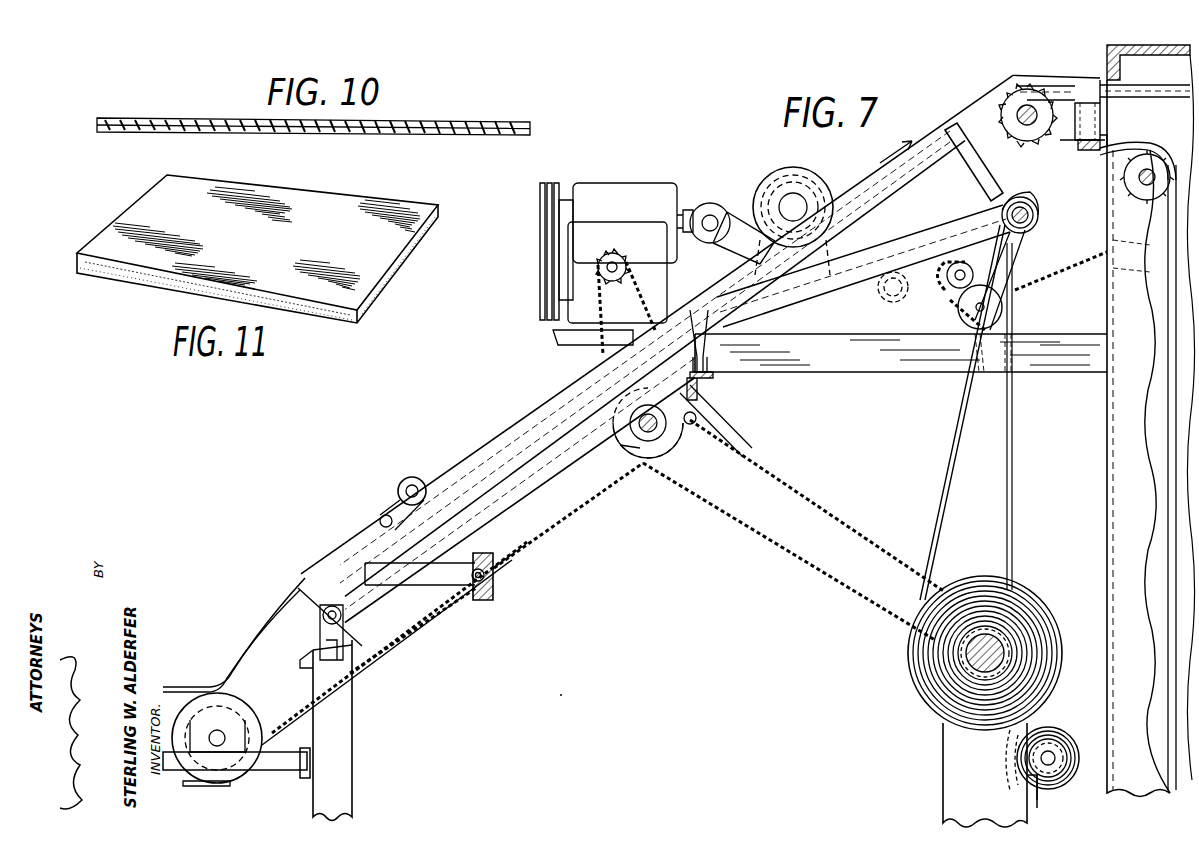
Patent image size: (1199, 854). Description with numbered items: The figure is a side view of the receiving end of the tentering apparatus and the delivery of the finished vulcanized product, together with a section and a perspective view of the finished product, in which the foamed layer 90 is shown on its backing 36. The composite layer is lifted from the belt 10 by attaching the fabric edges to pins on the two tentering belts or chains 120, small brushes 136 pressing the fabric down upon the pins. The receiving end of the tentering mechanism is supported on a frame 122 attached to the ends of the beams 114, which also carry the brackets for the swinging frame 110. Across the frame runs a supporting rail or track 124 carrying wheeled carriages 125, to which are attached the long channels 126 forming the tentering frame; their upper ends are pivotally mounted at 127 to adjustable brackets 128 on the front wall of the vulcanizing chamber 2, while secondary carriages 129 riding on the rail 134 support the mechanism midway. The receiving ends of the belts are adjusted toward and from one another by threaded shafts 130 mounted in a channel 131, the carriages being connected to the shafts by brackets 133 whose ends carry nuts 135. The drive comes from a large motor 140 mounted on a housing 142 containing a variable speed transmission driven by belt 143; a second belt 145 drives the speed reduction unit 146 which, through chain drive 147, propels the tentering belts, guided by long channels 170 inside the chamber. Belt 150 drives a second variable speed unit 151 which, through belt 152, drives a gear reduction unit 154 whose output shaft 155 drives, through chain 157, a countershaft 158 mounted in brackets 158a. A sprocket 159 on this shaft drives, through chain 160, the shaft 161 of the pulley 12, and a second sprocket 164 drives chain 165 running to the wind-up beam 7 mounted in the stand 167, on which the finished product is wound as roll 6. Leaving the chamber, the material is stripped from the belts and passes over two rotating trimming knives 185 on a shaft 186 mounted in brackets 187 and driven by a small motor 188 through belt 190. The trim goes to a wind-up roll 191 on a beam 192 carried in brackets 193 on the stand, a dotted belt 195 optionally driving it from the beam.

In FIG. 7, the vulcanizing chamber 2 is at (1096, 56).
In FIG. 7, the roll 6 is at (910, 672).
In FIG. 7, the beam 7 is at (1000, 650).
In FIG. 7, the belt 10 is at (980, 502).
In FIG. 7, the pulley 12 is at (245, 718).
In FIG. 10, the strip 36 is at (407, 118).
In FIG. 11, the strip 36 is at (372, 305).
In FIG. 7, the strip 36 is at (193, 687).
In FIG. 10, the foamed layer 90 is at (440, 134).
In FIG. 11, the foamed layer 90 is at (337, 200).
In FIG. 7, the foamed layer 90 is at (178, 687).
In FIG. 7, the swinging frame 110 is at (381, 652).
In FIG. 7, the beams 114 is at (276, 746).
In FIG. 7, the belts or chains 120 is at (1122, 146).
In FIG. 7, the frame 122 is at (352, 752).
In FIG. 7, the supporting rail or track 124 is at (318, 680).
In FIG. 7, the wheeled carriages 125 is at (346, 640).
In FIG. 7, the long channels 126 is at (990, 110).
In FIG. 7, the pivot 127 is at (1081, 102).
In FIG. 7, the adjustable brackets 128 is at (1068, 148).
In FIG. 7, the secondary carriages 129 is at (708, 362).
In FIG. 7, the threaded shafts 130 is at (494, 577).
In FIG. 7, the channel 131 is at (495, 594).
In FIG. 7, the brackets 133 is at (447, 600).
In FIG. 7, the rail 134 is at (700, 396).
In FIG. 7, the nuts 135 is at (485, 556).
In FIG. 7, the small brushes 136 is at (413, 477).
In FIG. 7, the large motor 140 is at (813, 182).
In FIG. 7, the housing 142 is at (802, 341).
In FIG. 7, the belt 143 is at (760, 212).
In FIG. 7, the second belt 145 is at (888, 272).
In FIG. 7, the speed reduction unit 146 is at (937, 240).
In FIG. 7, the chain drive 147 is at (1078, 279).
In FIG. 7, the belt 150 is at (726, 254).
In FIG. 7, the second variable speed unit 151 is at (676, 196).
In FIG. 7, the belt 152 is at (545, 321).
In FIG. 7, the gear reduction unit 154 is at (612, 232).
In FIG. 7, the output shaft 155 is at (618, 262).
In FIG. 7, the chain 157 is at (648, 300).
In FIG. 7, the countershaft 158 is at (672, 445).
In FIG. 7, the brackets 158a is at (638, 449).
In FIG. 7, the sprocket 159 is at (676, 466).
In FIG. 7, the chain 160 is at (584, 511).
In FIG. 7, the shaft 161 is at (215, 745).
In FIG. 7, the second sprocket 164 is at (697, 418).
In FIG. 7, the chain 165 is at (724, 514).
In FIG. 7, the stand 167 is at (943, 731).
In FIG. 7, the long channels 170 is at (1153, 87).
In FIG. 7, the trimming knives 185 is at (1038, 226).
In FIG. 7, the shaft 186 is at (1034, 214).
In FIG. 7, the brackets 187 is at (1036, 202).
In FIG. 7, the small motor 188 is at (958, 316).
In FIG. 7, the belt 190 is at (1027, 253).
In FIG. 7, the wind-up roll 191 is at (1097, 720).
In FIG. 7, the beam 192 is at (1055, 758).
In FIG. 7, the brackets 193 is at (1037, 800).
In FIG. 7, the belt 195 is at (1010, 753).